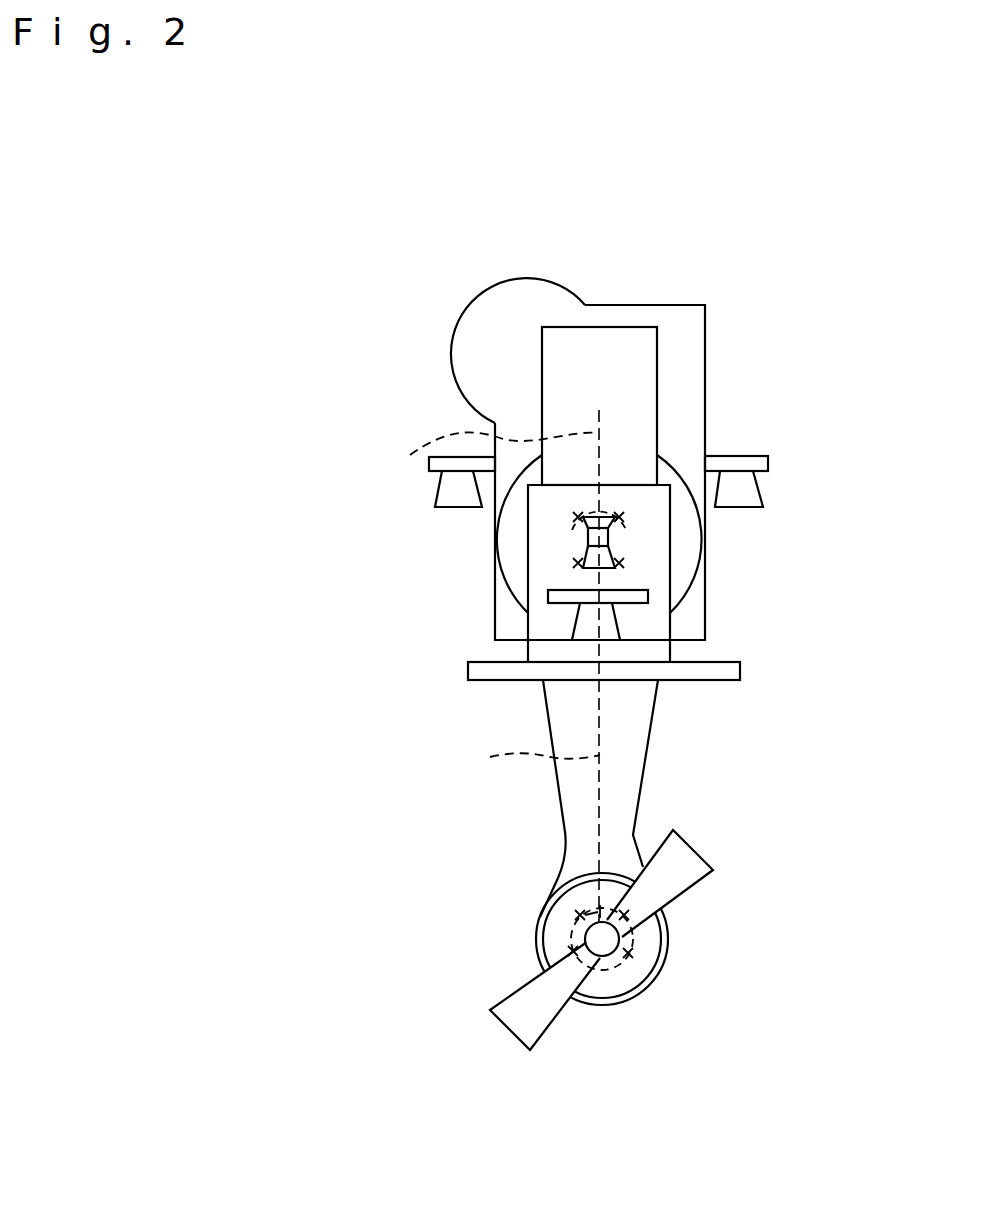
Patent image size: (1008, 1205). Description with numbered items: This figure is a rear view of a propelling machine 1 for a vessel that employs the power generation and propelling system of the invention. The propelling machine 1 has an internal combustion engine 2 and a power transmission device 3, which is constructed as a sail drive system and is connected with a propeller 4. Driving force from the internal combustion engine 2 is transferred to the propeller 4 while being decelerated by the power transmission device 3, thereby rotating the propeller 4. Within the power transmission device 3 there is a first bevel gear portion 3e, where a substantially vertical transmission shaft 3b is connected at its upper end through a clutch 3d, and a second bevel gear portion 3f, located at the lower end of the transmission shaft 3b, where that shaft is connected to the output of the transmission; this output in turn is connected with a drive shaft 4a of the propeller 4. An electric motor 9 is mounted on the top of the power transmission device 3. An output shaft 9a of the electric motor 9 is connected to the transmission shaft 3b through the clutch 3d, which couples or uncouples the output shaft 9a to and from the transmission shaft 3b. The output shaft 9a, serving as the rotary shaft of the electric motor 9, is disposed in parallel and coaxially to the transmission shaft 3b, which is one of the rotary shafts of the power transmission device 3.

The propelling machine 1 is at (812, 349).
The internal combustion engine 2 is at (693, 376).
The power transmission device 3 is at (650, 740).
The transmission shaft 3b is at (525, 761).
The clutch 3d is at (585, 545).
The first bevel gear portion 3e is at (632, 545).
The second bevel gear portion 3f is at (636, 945).
The propeller 4 is at (520, 980).
The drive shaft 4a is at (603, 939).
The electric motor 9 is at (550, 388).
The output shaft 9a is at (485, 453).